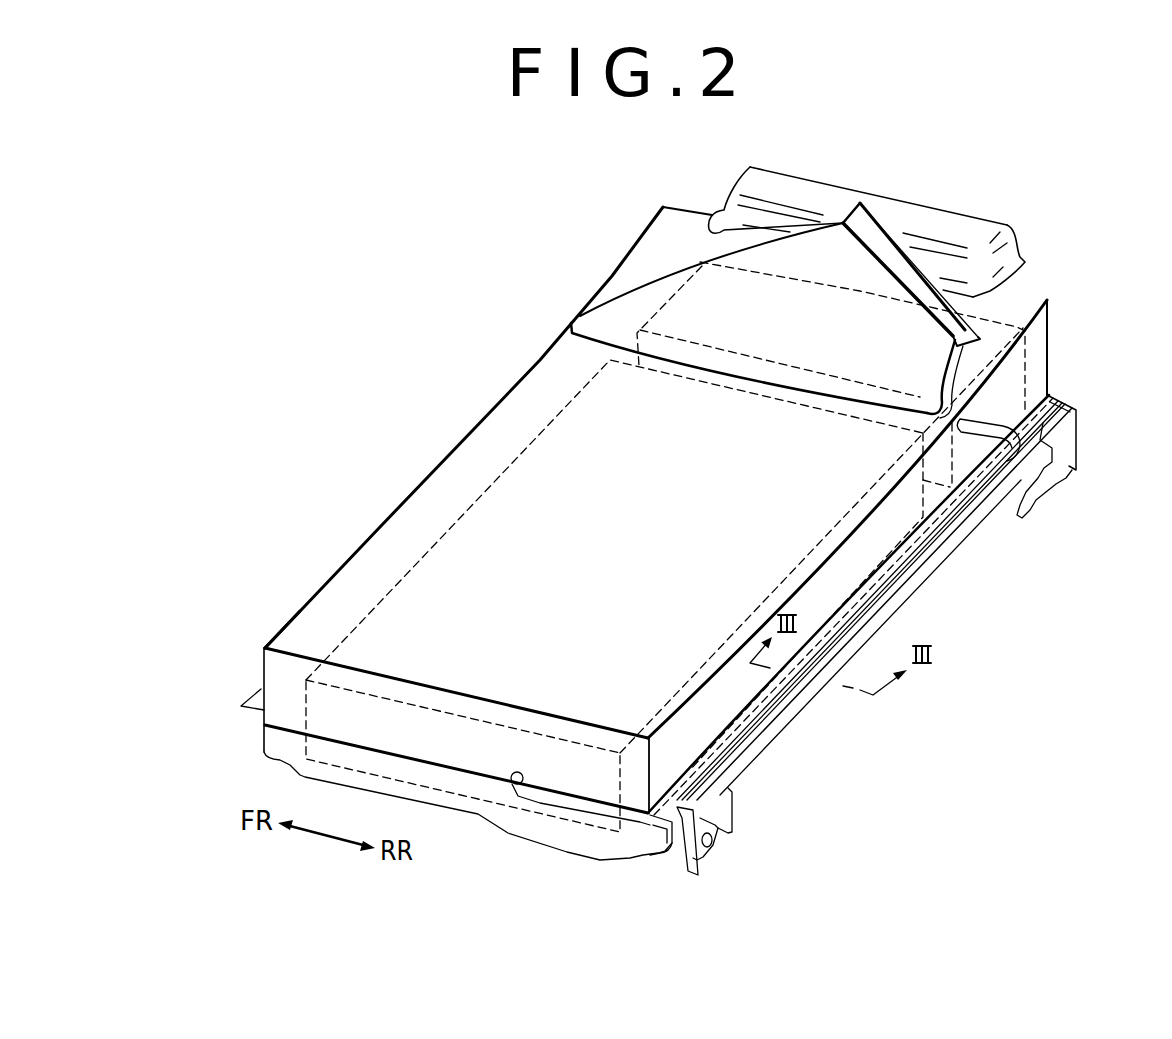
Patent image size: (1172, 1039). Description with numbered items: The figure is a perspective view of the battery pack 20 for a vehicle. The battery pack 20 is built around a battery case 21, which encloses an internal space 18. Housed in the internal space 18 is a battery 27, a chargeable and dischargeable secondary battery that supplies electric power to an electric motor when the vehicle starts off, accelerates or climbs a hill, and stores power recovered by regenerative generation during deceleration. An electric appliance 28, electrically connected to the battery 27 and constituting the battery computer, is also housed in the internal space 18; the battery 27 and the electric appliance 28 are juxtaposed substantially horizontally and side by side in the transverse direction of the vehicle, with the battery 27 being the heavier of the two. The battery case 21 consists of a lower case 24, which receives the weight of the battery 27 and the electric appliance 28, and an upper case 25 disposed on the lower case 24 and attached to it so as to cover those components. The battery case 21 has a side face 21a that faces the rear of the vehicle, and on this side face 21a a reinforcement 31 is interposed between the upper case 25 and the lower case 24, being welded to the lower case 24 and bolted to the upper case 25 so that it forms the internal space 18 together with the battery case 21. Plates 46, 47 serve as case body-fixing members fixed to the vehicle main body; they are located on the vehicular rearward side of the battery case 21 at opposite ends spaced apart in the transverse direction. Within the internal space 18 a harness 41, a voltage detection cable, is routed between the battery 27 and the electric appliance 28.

The internal space 18 is at (415, 517).
The battery pack 20 is at (544, 280).
The battery case 21 is at (313, 552).
The side face 21a is at (888, 532).
The lower case 24 is at (263, 745).
The upper case 25 is at (300, 610).
The battery 27 is at (507, 466).
The electric appliance 28 is at (702, 266).
The reinforcement 31 is at (648, 850).
The harness 41 is at (913, 580).
The plate 46 is at (733, 807).
The plate 47 is at (1067, 490).